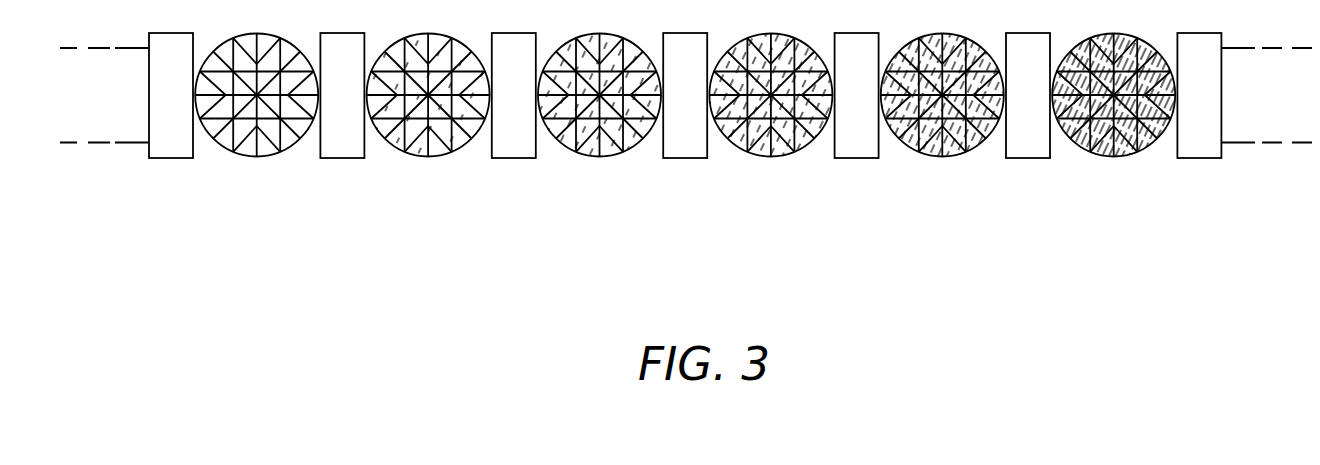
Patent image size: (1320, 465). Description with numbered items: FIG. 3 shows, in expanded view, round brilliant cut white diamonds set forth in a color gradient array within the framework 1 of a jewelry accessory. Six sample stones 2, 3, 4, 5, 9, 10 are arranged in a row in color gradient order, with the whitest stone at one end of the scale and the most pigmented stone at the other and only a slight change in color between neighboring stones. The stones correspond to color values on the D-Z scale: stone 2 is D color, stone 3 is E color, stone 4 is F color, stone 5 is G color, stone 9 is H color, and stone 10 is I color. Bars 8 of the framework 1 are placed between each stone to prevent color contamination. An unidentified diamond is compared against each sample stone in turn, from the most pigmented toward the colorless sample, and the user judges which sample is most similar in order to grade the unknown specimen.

The framework 1 is at (107, 143).
The bars 8 is at (168, 158).
The round brilliant white diamond (D color) 2 is at (257, 158).
The round brilliant white diamond (E color) 3 is at (427, 158).
The round brilliant white diamond (F color) 4 is at (600, 158).
The round brilliant white diamond (G color) 5 is at (769, 158).
The round brilliant white diamond (H color) 9 is at (941, 158).
The round brilliant white diamond (I color) 10 is at (1113, 158).